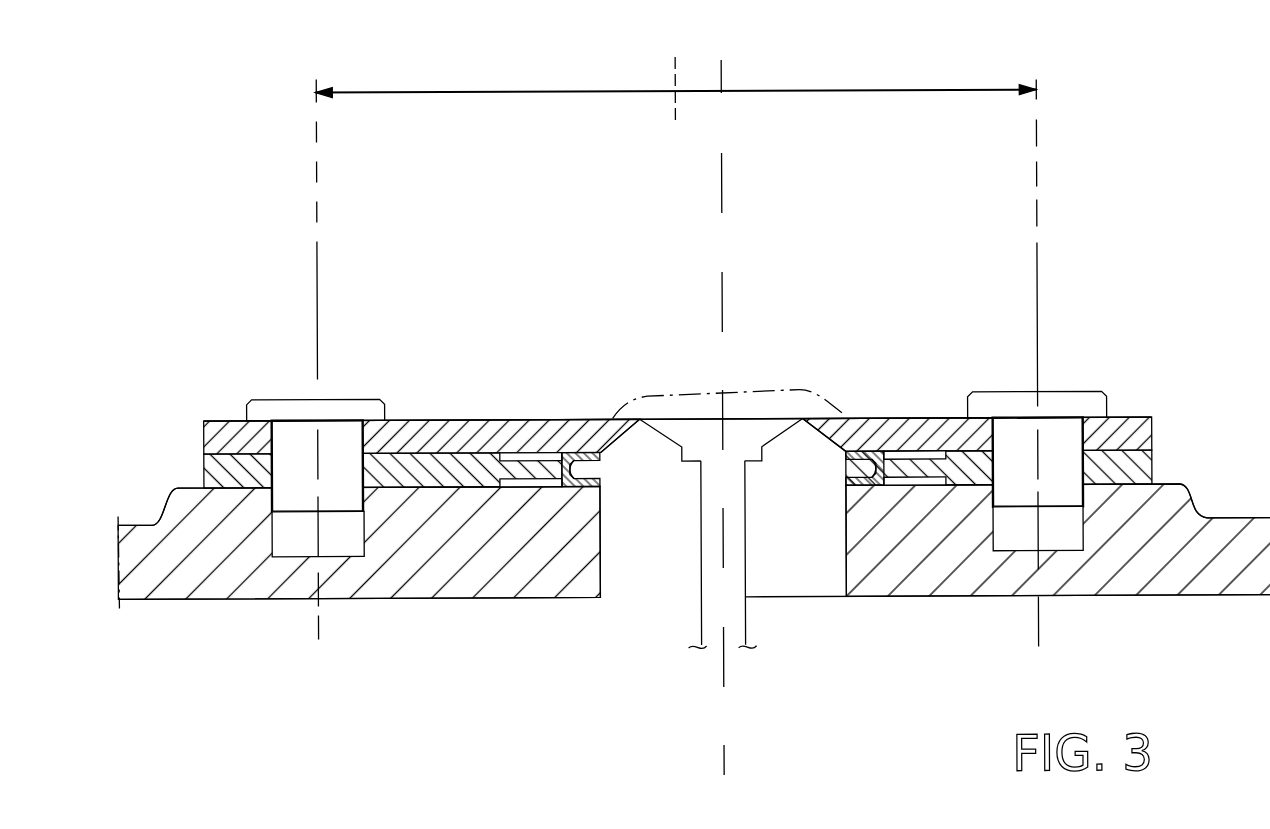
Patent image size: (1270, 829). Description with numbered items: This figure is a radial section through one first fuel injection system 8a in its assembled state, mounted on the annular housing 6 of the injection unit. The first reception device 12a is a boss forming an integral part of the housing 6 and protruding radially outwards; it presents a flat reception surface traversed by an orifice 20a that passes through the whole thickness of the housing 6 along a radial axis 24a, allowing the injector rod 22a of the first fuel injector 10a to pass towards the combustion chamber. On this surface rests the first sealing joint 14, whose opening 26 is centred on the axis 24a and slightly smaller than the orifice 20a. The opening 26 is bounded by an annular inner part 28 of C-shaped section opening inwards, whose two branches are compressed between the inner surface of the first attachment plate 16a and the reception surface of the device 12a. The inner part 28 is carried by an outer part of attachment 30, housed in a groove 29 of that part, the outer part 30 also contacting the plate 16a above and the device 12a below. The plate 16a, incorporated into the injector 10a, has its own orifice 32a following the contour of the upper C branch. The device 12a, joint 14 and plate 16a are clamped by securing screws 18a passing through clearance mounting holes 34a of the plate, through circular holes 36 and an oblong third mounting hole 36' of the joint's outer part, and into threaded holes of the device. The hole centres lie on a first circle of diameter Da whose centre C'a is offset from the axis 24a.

The annular housing 6 is at (1142, 606).
The first fuel injection system 8a is at (1190, 243).
The first fuel injector 10a is at (826, 388).
The first reception device 12a is at (152, 505).
The first sealing joint 14 is at (202, 472).
The first attachment plate 16a is at (203, 437).
The first securing screw 18a is at (282, 412).
The orifice 20a is at (600, 570).
The injector rod 22a is at (737, 613).
The radial axis 24a is at (723, 67).
The opening 26 is at (602, 487).
The annular inner part 28 is at (575, 468).
The groove 29 is at (540, 487).
The outer part of attachment 30 is at (450, 468).
The orifice 32a is at (840, 427).
The mounting hole 34a is at (277, 432).
The mounting hole 36 is at (1037, 446).
The third mounting hole 36' is at (344, 454).
The first diameter Da is at (525, 90).
The centre of first circle C'a is at (640, 75).